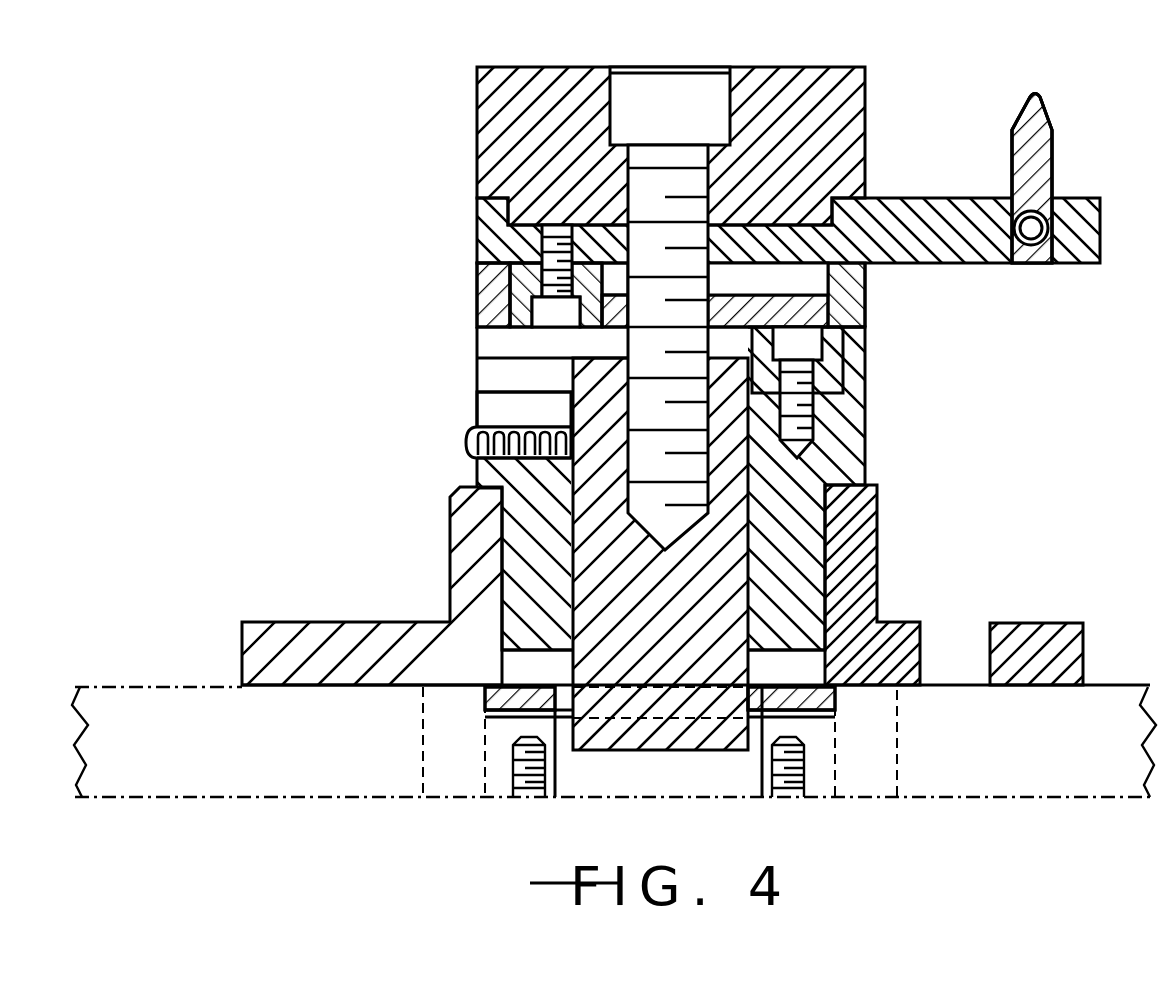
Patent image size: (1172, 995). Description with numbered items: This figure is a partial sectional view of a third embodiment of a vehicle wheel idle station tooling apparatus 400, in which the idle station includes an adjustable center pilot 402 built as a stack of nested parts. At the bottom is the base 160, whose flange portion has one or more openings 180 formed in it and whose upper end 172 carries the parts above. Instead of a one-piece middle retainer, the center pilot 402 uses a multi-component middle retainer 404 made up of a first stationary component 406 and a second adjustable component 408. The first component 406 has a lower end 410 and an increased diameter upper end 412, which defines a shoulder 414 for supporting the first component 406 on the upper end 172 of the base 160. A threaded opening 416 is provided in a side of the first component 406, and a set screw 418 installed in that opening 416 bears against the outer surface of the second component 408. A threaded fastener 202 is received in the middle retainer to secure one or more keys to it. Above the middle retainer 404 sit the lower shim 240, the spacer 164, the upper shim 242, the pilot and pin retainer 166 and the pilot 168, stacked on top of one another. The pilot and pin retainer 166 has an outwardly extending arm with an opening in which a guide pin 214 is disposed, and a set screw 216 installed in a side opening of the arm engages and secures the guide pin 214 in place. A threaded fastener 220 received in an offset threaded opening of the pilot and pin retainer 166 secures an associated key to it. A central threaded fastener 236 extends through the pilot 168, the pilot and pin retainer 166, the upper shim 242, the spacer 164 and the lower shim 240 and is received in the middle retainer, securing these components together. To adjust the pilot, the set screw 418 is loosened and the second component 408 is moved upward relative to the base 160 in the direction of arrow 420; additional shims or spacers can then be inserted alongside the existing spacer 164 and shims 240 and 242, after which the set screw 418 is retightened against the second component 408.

The base 160 is at (1035, 632).
The spacer 164 is at (472, 323).
The pilot and pin retainer 166 is at (472, 224).
The pilot 168 is at (472, 151).
The upper end 172 is at (866, 486).
The openings 180 is at (983, 687).
The threaded fastener 202 is at (800, 378).
The guide pin 214 is at (1040, 160).
The set screw 216 is at (1048, 243).
The threaded fastener 220 is at (548, 275).
The threaded fastener 236 is at (687, 78).
The lower shim 240 is at (492, 372).
The upper shim 242 is at (818, 282).
The idle station tooling apparatus 400 is at (183, 378).
The adjustable center pilot 402 is at (303, 240).
The multi-component middle retainer 404 is at (905, 410).
The first stationary component 406 is at (852, 452).
The second adjustable component 408 is at (718, 578).
The lower end 410 is at (810, 618).
The upper end 412 is at (485, 412).
The shoulder 414 is at (457, 497).
The threaded opening 416 is at (468, 440).
The set screw 418 is at (475, 459).
The arrow 420 is at (293, 372).